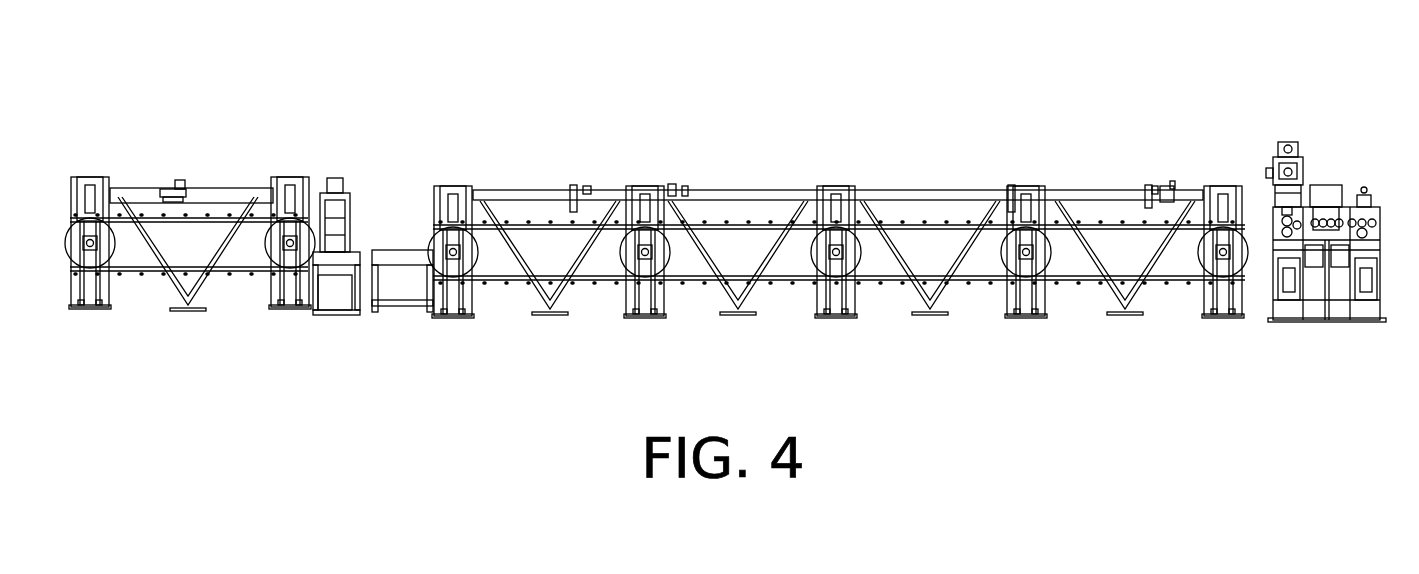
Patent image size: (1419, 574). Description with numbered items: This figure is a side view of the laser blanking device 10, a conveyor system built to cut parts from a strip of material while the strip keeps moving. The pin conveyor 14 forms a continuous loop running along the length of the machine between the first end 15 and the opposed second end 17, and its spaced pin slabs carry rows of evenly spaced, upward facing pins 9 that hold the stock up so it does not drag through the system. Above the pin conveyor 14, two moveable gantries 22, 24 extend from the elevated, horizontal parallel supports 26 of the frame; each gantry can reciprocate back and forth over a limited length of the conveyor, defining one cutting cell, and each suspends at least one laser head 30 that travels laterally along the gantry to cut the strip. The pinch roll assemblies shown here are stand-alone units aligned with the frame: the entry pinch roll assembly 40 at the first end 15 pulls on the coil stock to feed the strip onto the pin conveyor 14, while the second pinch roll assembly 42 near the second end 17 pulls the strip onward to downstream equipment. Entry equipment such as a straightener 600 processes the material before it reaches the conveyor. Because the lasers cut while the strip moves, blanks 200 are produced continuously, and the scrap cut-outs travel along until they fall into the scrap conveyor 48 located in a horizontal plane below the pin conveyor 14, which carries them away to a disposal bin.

The pins 9 is at (683, 283).
The laser blanking device 10 is at (796, 164).
The pin conveyor 14 is at (657, 310).
The first end 15 is at (1308, 189).
The second end 17 is at (411, 194).
The gantry 22 is at (1170, 186).
The gantry 24 is at (170, 189).
The horizontal supports 26 is at (223, 188).
The laser head 30 is at (180, 180).
The entry pinch roll assembly 40 is at (1278, 217).
The second pinch roll assembly 42 is at (333, 177).
The scrap conveyor 48 is at (410, 250).
The blanks 200 is at (250, 313).
The straightener 600 is at (1332, 218).